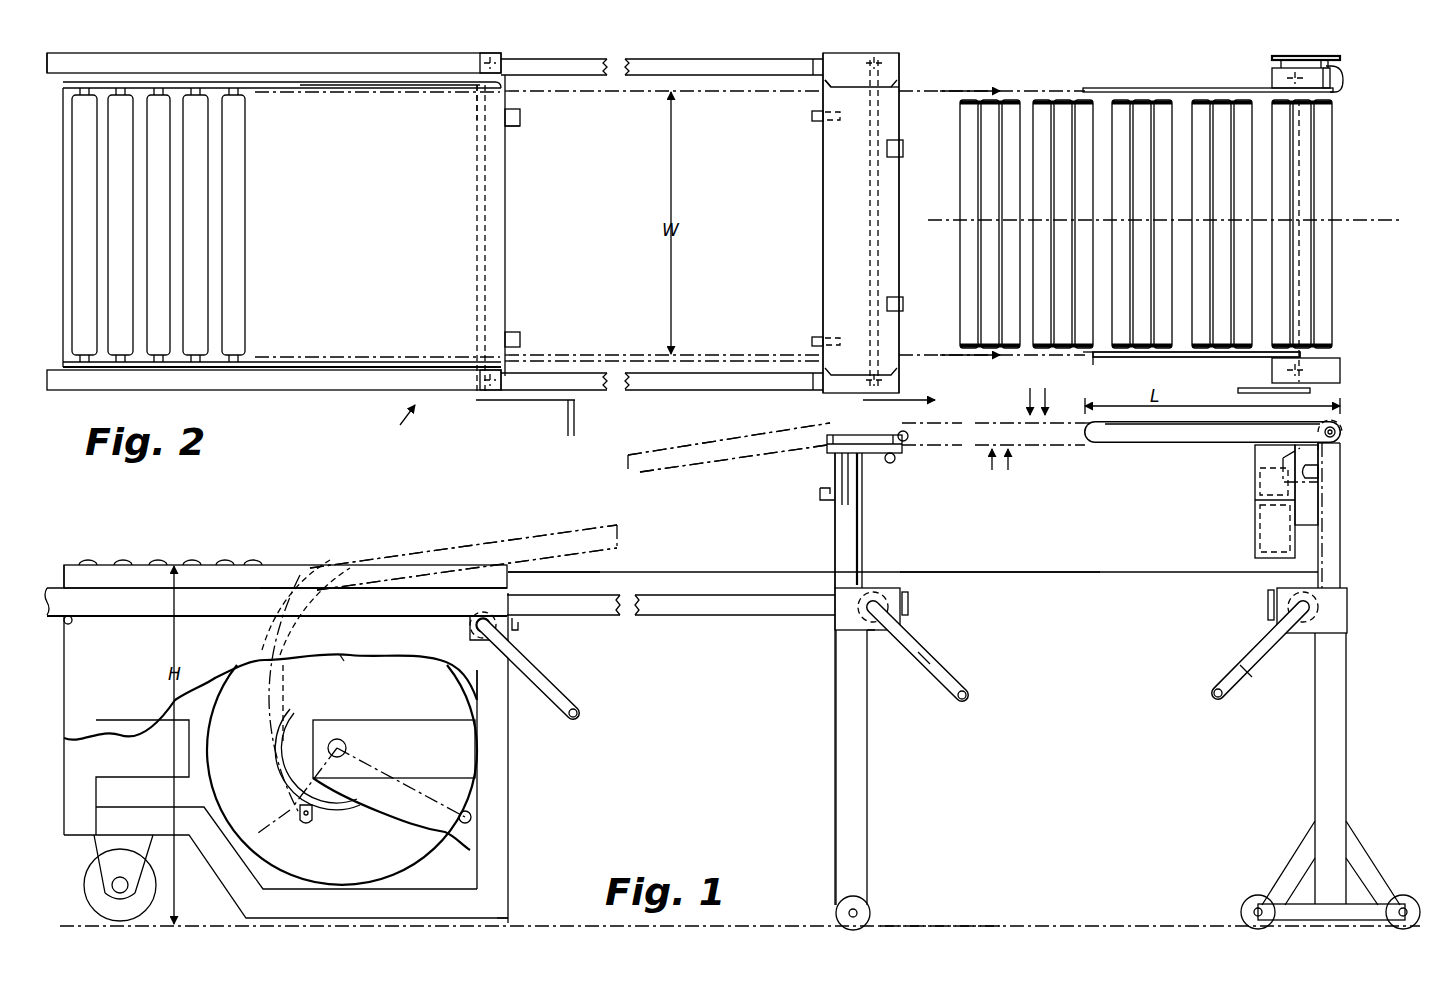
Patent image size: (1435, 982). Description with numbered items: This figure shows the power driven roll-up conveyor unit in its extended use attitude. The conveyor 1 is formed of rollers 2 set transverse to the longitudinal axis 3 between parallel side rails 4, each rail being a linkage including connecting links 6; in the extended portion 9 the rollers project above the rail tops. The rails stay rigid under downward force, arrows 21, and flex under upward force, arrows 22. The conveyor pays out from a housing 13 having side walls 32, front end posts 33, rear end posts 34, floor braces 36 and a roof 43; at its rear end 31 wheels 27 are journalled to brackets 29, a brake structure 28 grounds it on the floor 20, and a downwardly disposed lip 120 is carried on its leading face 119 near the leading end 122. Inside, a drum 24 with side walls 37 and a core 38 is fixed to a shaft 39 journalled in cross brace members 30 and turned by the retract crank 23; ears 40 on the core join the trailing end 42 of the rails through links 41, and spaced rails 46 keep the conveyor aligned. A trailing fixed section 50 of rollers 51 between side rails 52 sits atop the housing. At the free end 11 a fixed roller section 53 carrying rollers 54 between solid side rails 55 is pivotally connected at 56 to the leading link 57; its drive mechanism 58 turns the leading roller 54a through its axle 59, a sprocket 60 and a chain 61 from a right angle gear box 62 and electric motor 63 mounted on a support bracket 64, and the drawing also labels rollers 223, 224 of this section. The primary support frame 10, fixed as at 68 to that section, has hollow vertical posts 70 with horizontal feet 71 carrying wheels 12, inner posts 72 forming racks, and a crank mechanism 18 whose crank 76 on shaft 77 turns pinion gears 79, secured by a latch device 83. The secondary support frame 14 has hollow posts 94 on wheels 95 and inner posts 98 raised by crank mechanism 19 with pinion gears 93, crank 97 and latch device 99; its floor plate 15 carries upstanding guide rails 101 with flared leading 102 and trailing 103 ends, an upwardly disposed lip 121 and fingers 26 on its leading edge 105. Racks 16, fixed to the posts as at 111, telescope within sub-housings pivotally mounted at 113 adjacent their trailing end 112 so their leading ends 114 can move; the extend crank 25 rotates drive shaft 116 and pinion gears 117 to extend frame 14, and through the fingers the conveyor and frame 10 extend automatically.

In FIG. 2, the roll-up conveyor 1 is at (413, 420).
In FIG. 1, the roll-up conveyor 1 is at (415, 532).
In FIG. 2, the rollers 2 is at (240, 250).
In FIG. 1, the rollers 2 is at (205, 560).
In FIG. 2, the longitudinal axis 3 is at (1392, 226).
In FIG. 2, the side rails 4 is at (735, 90).
In FIG. 1, the side rails 4 is at (657, 472).
In FIG. 1, the connecting links 6 is at (1329, 448).
In FIG. 1, the extended portion 9 is at (955, 575).
In FIG. 2, the primary support frame 10 is at (1345, 68).
In FIG. 1, the primary support frame 10 is at (1308, 718).
In FIG. 2, the free end 11 is at (1345, 320).
In FIG. 1, the free end 11 is at (1350, 410).
In FIG. 1, the wheels 12 is at (1260, 928).
In FIG. 2, the housing 13 is at (233, 52).
In FIG. 1, the housing 13 is at (498, 780).
In FIG. 2, the secondary support frame 14 is at (900, 55).
In FIG. 1, the secondary support frame 14 is at (832, 732).
In FIG. 2, the floor plate 15 is at (828, 232).
In FIG. 1, the floor plate 15 is at (872, 462).
In FIG. 2, the rack 16 is at (600, 62).
In FIG. 1, the rack 16 is at (648, 612).
In FIG. 2, the crank mechanism 18 is at (1238, 390).
In FIG. 1, the crank mechanism 18 is at (1240, 648).
In FIG. 2, the crank mechanism 19 is at (916, 402).
In FIG. 1, the crank mechanism 19 is at (945, 652).
In FIG. 1, the floor 20 is at (895, 940).
In FIG. 1, the arrows 21 is at (1033, 401).
In FIG. 1, the arrows 22 is at (1008, 473).
In FIG. 1, the retract crank 23 is at (400, 752).
In FIG. 1, the drum 24 is at (415, 865).
In FIG. 2, the extend crank 25 is at (515, 415).
In FIG. 1, the extend crank 25 is at (585, 704).
In FIG. 2, the fingers 26 is at (903, 148).
In FIG. 1, the fingers 26 is at (909, 437).
In FIG. 1, the wheels 27 is at (88, 905).
In FIG. 2, the brake structure 28 is at (512, 130).
In FIG. 1, the brake structure 28 is at (530, 630).
In FIG. 1, the brackets 29 is at (100, 870).
In FIG. 1, the cross brace members 30 is at (125, 808).
In FIG. 2, the rear end 31 is at (88, 50).
In FIG. 1, the rear end 31 is at (74, 545).
In FIG. 1, the side walls 32 is at (106, 725).
In FIG. 1, the front end posts 33 is at (498, 832).
In FIG. 1, the rear end posts 34 is at (95, 760).
In FIG. 1, the floor braces 36 is at (320, 918).
In FIG. 1, the side walls 37 is at (351, 764).
In FIG. 1, the core 38 is at (335, 805).
In FIG. 1, the shaft 39 is at (345, 740).
In FIG. 1, the ears 40 is at (305, 822).
In FIG. 1, the links 41 is at (270, 828).
In FIG. 1, the trailing end 42 is at (275, 803).
In FIG. 2, the roof 43 is at (362, 82).
In FIG. 1, the roof 43 is at (285, 570).
In FIG. 2, the rails 46 is at (440, 95).
In FIG. 1, the rails 46 is at (350, 568).
In FIG. 2, the trailing fixed section 50 is at (140, 92).
In FIG. 1, the trailing fixed section 50 is at (133, 560).
In FIG. 2, the rollers 51 is at (92, 110).
In FIG. 1, the rollers 51 is at (108, 560).
In FIG. 2, the side rails 52 is at (175, 88).
In FIG. 1, the side rails 52 is at (150, 565).
In FIG. 2, the fixed roller section 53 is at (1175, 88).
In FIG. 1, the fixed roller section 53 is at (1188, 450).
In FIG. 2, the rollers 54 is at (1178, 105).
In FIG. 2, the leading roller 54a is at (1328, 170).
In FIG. 2, the solid side rails 55 is at (1115, 358).
In FIG. 1, the solid side rails 55 is at (1145, 445).
In FIG. 2, the pivotal connection 56 is at (1096, 360).
In FIG. 1, the pivotal connection 56 is at (1100, 445).
In FIG. 2, the leading link 57 is at (1083, 360).
In FIG. 1, the leading link 57 is at (1080, 440).
In FIG. 1, the drive mechanism 58 is at (1235, 510).
In FIG. 2, the axle 59 is at (1344, 80).
In FIG. 1, the axle 59 is at (1340, 434).
In FIG. 2, the sprocket 60 is at (1330, 56).
In FIG. 1, the sprocket 60 is at (1347, 448).
In FIG. 2, the chain 61 is at (1305, 56).
In FIG. 1, the chain 61 is at (1320, 482).
In FIG. 1, the right angle gear box 62 is at (1258, 486).
In FIG. 1, the electric motor 63 is at (1258, 535).
In FIG. 1, the support bracket 64 is at (1320, 526).
In FIG. 1, the fixing point 68 is at (1345, 450).
In FIG. 1, the hollow vertical posts 70 is at (1340, 718).
In FIG. 1, the horizontal foot 71 is at (1338, 920).
In FIG. 1, the hollow inner post 72 is at (1342, 560).
In FIG. 1, the primary frame crank 76 is at (1245, 672).
In FIG. 2, the shaft 77 is at (1302, 280).
In FIG. 1, the shaft 77 is at (1320, 612).
In FIG. 2, the pinion gear 79 is at (1270, 77).
In FIG. 1, the pinion gear 79 is at (1322, 600).
In FIG. 1, the latch device 83 is at (1266, 610).
In FIG. 2, the pinion gears 93 is at (884, 63).
In FIG. 1, the pinion gears 93 is at (858, 630).
In FIG. 1, the hollow posts 94 is at (862, 690).
In FIG. 1, the wheels 95 is at (872, 912).
In FIG. 1, the crank 97 is at (925, 668).
In FIG. 1, the inner posts 98 is at (850, 560).
In FIG. 1, the latch device 99 is at (910, 609).
In FIG. 2, the guide rails 101 is at (838, 80).
In FIG. 1, the guide rails 101 is at (878, 440).
In FIG. 2, the leading ends 102 is at (897, 86).
In FIG. 2, the trailing ends 103 is at (822, 90).
In FIG. 2, the leading edge 105 is at (900, 255).
In FIG. 2, the fixing point 111 is at (815, 60).
In FIG. 2, the trailing end 112 is at (60, 392).
In FIG. 1, the trailing end 112 is at (70, 600).
In FIG. 1, the pivotal mounting 113 is at (73, 623).
In FIG. 2, the leading ends 114 is at (485, 53).
In FIG. 1, the leading ends 114 is at (462, 610).
In FIG. 2, the drive shaft 116 is at (477, 240).
In FIG. 1, the drive shaft 116 is at (490, 632).
In FIG. 2, the pinion gear 117 is at (525, 62).
In FIG. 1, the pinion gear 117 is at (470, 636).
In FIG. 2, the leading face 119 is at (508, 232).
In FIG. 1, the leading face 119 is at (510, 752).
In FIG. 2, the downwardly disposed lip 120 is at (522, 115).
In FIG. 1, the downwardly disposed lip 120 is at (560, 625).
In FIG. 2, the upwardly disposed lip 121 is at (815, 122).
In FIG. 1, the upwardly disposed lip 121 is at (822, 498).
In FIG. 1, the leading end 122 is at (505, 525).
In FIG. 2, the roller 223 is at (1040, 100).
In FIG. 2, the roller 224 is at (1062, 100).